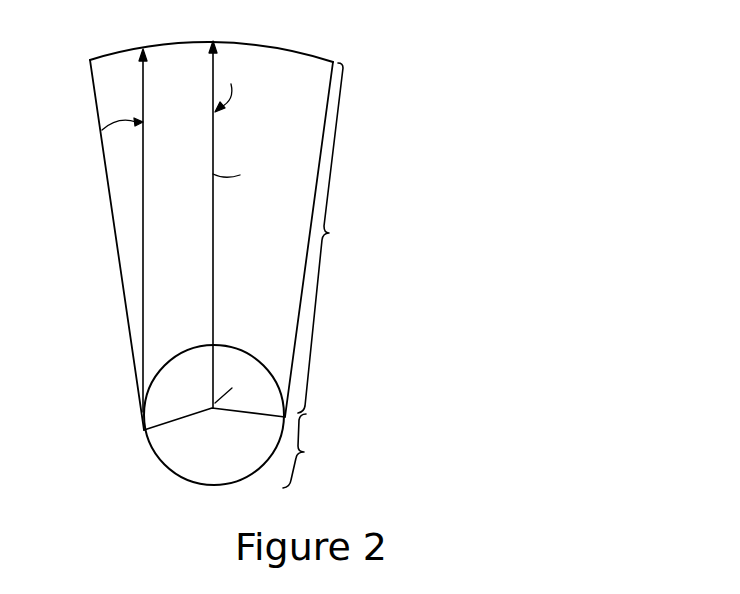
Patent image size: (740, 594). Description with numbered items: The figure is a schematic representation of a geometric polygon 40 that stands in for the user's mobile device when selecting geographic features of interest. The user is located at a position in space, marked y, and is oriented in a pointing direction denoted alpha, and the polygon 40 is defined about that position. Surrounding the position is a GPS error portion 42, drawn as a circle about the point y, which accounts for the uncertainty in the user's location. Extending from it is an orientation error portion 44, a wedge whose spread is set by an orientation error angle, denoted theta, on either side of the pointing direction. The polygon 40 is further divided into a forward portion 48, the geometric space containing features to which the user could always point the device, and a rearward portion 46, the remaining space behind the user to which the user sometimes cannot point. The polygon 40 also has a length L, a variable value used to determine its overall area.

The geometric polygon 40 is at (296, 264).
The GPS error portion 42 is at (197, 453).
The orientation error portion 44 is at (247, 232).
The rearward portion 46 is at (304, 452).
The forward portion 48 is at (329, 233).